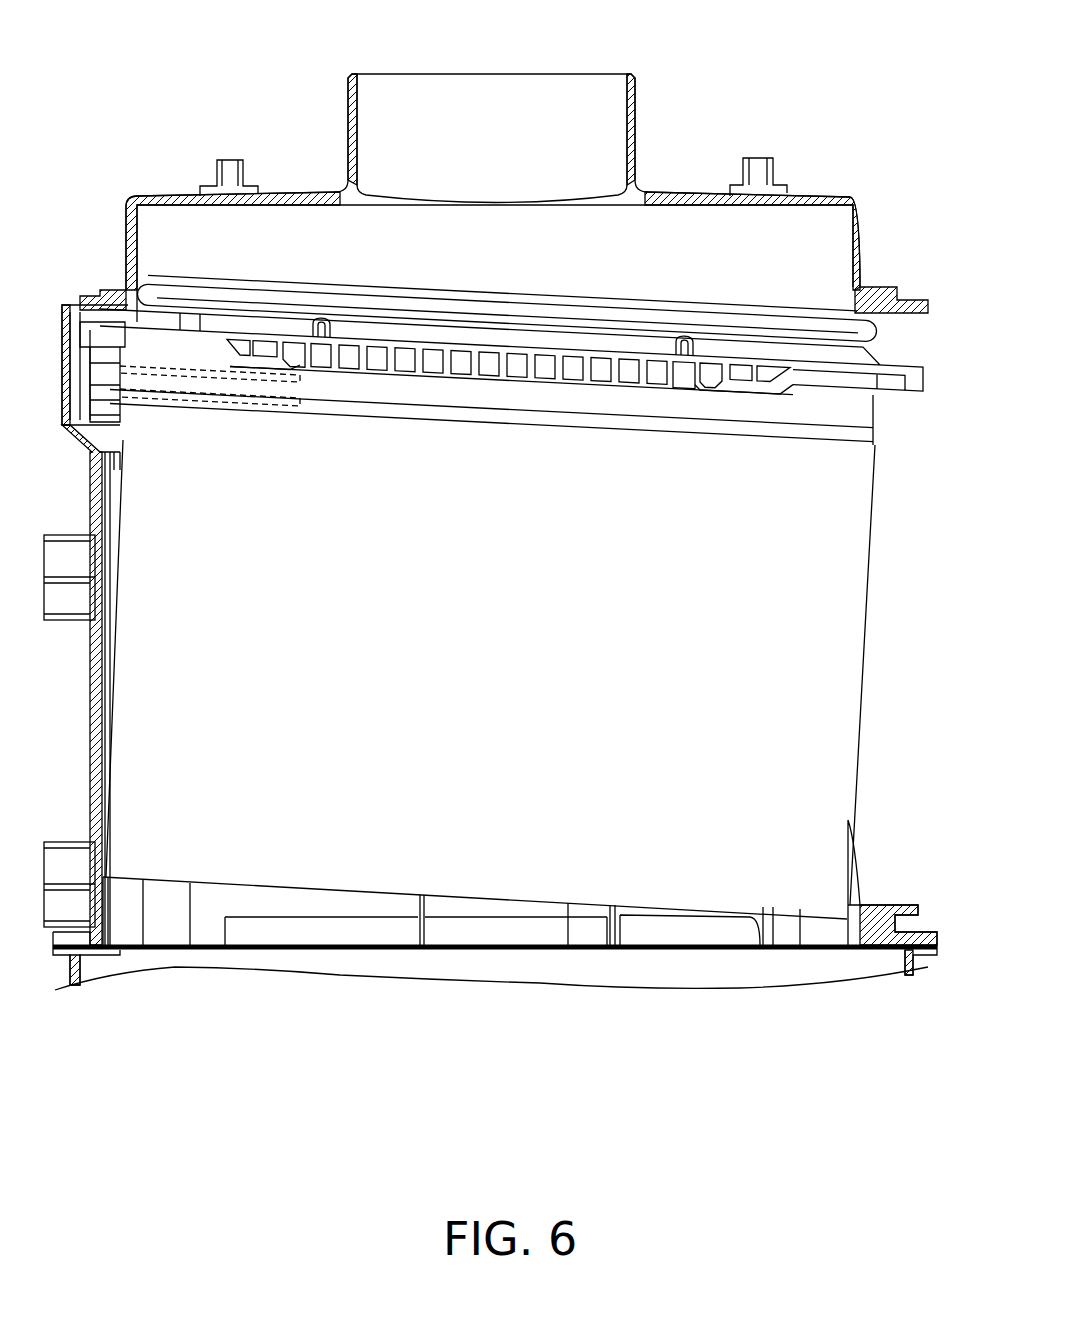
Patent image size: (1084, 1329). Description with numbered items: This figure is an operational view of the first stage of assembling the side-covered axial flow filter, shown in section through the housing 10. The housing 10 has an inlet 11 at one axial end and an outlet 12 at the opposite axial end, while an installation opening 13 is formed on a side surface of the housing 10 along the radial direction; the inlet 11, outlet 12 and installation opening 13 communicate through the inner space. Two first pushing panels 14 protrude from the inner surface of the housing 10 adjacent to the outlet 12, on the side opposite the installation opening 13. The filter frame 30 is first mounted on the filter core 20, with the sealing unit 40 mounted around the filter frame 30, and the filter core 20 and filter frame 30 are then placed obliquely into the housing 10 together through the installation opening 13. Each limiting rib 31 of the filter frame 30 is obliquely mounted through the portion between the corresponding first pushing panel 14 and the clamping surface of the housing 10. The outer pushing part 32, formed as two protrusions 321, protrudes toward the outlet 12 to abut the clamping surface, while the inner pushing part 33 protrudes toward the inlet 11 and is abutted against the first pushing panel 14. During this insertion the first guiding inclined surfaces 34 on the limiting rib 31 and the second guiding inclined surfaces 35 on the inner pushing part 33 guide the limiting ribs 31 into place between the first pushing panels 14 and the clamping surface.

The housing 10 is at (127, 190).
The inlet 11 is at (491, 926).
The outlet 12 is at (482, 121).
The installation opening 13 is at (876, 671).
The first pushing panel 14 is at (183, 375).
The filter core 20 is at (855, 525).
The filter frame 30 is at (915, 392).
The limiting rib 31 is at (670, 370).
The outer pushing part 32 is at (311, 320).
The protrusion 321 is at (330, 315).
The inner pushing part 33 is at (412, 375).
The first guiding inclined surface 34 is at (190, 332).
The second guiding inclined surface 35 is at (268, 360).
The sealing unit 40 is at (167, 288).